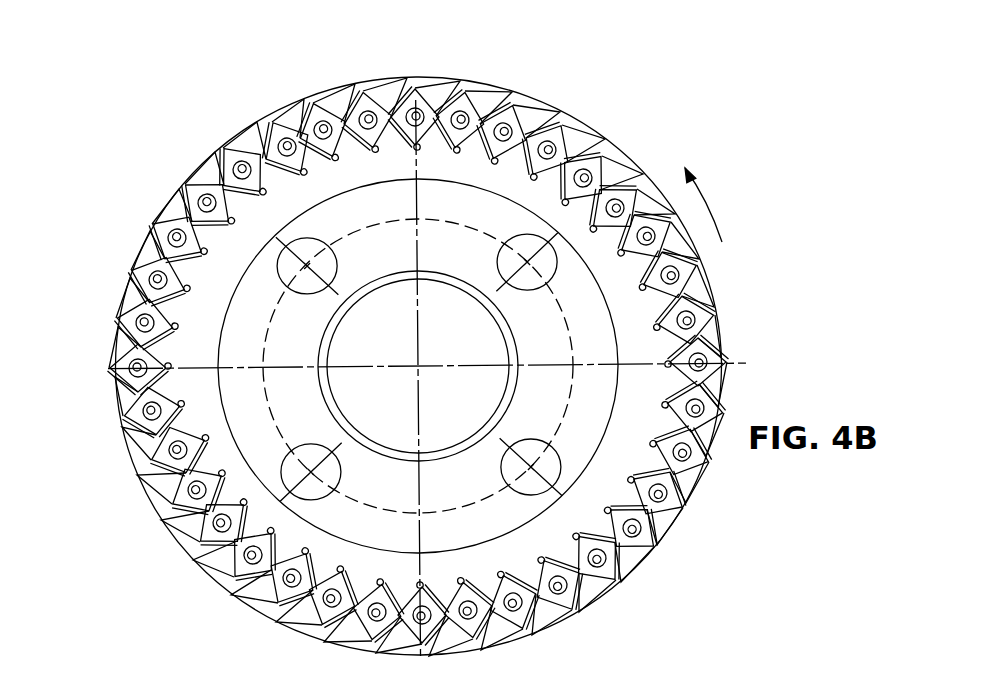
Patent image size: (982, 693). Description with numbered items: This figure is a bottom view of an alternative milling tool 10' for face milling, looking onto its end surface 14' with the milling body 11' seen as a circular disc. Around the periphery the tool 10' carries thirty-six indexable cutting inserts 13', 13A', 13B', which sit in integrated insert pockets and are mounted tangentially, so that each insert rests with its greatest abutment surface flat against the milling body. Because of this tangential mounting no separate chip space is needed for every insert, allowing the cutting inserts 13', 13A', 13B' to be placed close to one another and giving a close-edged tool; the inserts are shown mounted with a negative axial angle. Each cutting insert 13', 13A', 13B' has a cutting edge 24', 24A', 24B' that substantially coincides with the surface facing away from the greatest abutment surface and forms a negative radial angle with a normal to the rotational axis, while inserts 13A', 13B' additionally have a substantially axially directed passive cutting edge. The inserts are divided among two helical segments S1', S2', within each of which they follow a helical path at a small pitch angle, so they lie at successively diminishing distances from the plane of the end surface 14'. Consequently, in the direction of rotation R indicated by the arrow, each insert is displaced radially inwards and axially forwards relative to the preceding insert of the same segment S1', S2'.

The milling tool 10' is at (446, 347).
The cutter body 11' is at (418, 365).
The cutting insert 13' is at (631, 185).
The cutting insert 13A' is at (424, 351).
The cutting insert 13B' is at (421, 353).
The end surface 14' is at (237, 158).
The cutting edge 24' is at (418, 366).
The cutting edge 24A' is at (743, 297).
The cutting edge 24B' is at (406, 366).
The helical segment S1' is at (501, 97).
The helical segment S2' is at (521, 615).
The direction of rotation R is at (714, 205).